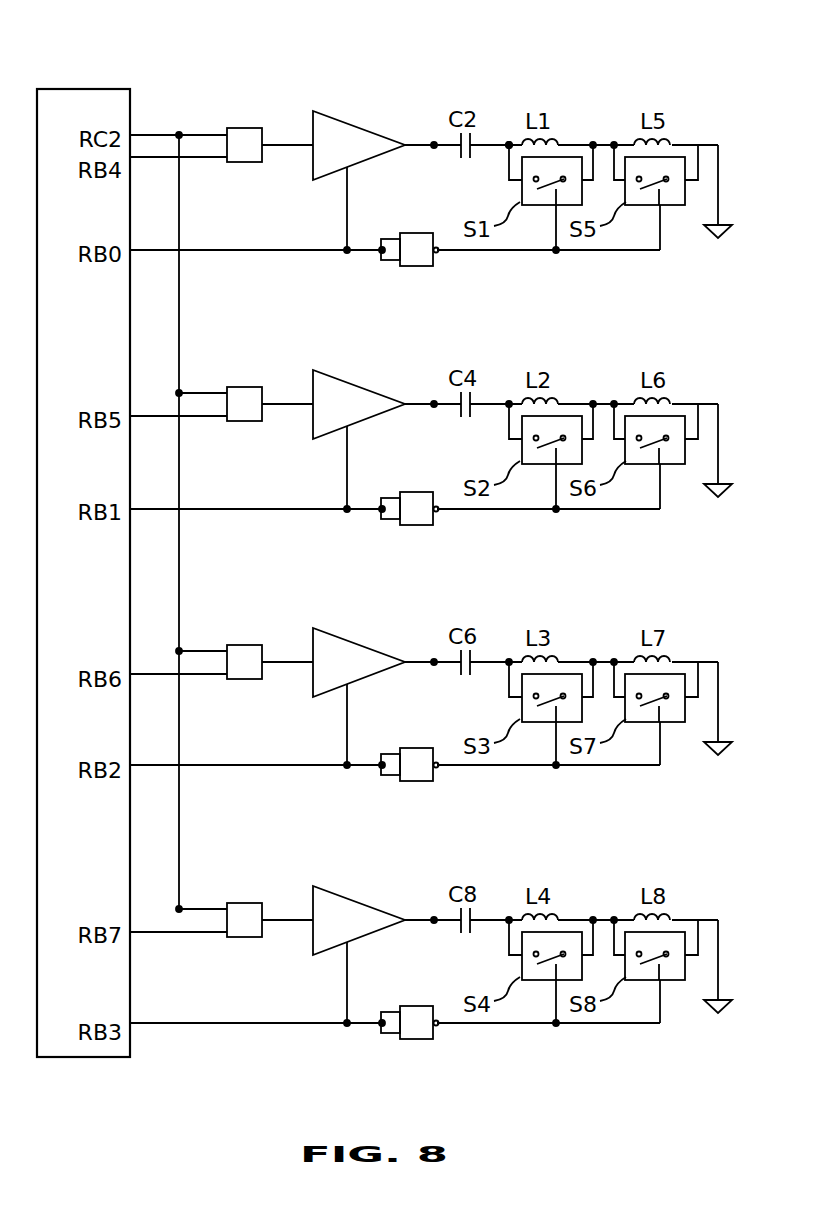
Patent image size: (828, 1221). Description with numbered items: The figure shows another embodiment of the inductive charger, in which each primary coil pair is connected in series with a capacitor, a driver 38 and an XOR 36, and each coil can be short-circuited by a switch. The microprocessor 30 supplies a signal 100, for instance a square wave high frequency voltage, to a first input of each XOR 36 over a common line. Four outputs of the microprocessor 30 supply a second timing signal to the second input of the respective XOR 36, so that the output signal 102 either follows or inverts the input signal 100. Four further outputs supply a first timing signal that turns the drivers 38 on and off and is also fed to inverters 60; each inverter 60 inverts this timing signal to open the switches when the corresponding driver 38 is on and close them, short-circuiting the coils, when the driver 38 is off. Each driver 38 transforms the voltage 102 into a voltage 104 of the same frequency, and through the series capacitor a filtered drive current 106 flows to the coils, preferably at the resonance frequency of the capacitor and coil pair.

The microprocessor 30 is at (97, 353).
The XOR 36 is at (245, 127).
The driver 38 is at (342, 120).
The inverter 60 is at (417, 233).
The signal 100 is at (180, 132).
The output signal 102 is at (287, 142).
The voltage 104 is at (433, 142).
The filtered drive current 106 is at (509, 142).